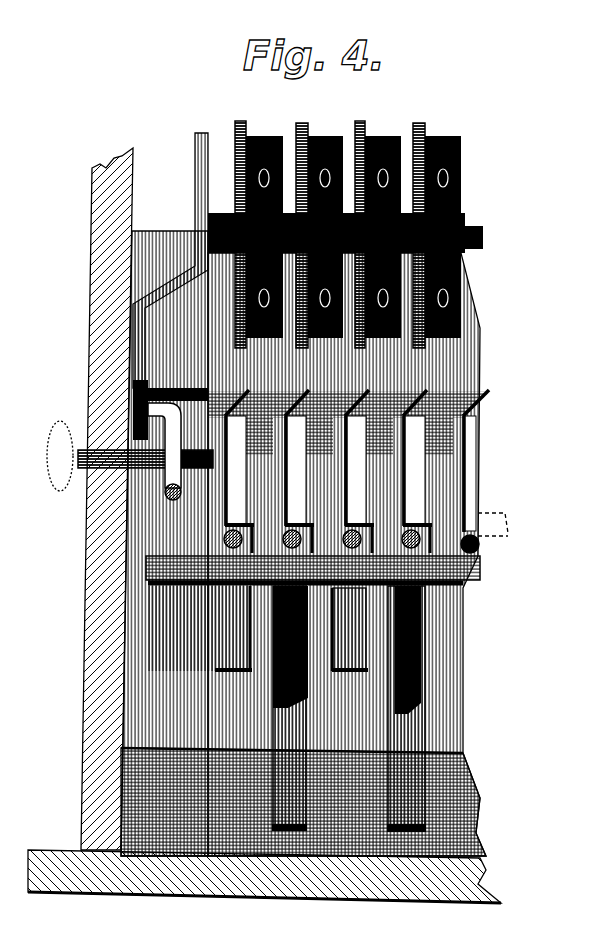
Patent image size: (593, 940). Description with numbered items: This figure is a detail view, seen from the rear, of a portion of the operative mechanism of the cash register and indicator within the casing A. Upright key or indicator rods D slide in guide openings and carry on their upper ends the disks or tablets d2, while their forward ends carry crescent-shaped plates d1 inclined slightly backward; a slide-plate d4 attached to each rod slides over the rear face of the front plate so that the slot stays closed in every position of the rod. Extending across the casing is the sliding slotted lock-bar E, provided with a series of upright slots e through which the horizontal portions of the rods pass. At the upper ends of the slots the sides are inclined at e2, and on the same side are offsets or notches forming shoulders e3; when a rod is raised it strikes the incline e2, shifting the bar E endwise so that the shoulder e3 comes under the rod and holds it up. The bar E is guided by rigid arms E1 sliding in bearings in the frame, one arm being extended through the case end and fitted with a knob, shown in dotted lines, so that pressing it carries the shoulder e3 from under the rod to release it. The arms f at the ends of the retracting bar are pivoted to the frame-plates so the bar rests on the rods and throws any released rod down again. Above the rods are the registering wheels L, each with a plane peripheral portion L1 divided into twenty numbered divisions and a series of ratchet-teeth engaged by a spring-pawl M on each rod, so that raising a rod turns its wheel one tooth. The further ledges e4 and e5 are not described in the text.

The casing A is at (75, 641).
The spring-pawl M is at (420, 367).
The wheel L is at (407, 121).
The plane peripheral portion of wheel L1 is at (259, 128).
The sliding slotted lock-bar E is at (70, 450).
The guiding and supporting arm E1 is at (170, 374).
The arm of retracting-bar f is at (180, 440).
The upright slot e is at (250, 520).
The incline e2 is at (266, 410).
The shoulder e3 is at (310, 420).
The ledge e4 is at (252, 420).
The ledge e5 is at (428, 422).
The rod D is at (195, 560).
The plate d1 is at (212, 610).
The tablet d2 is at (330, 630).
The slide-plate d4 is at (455, 778).